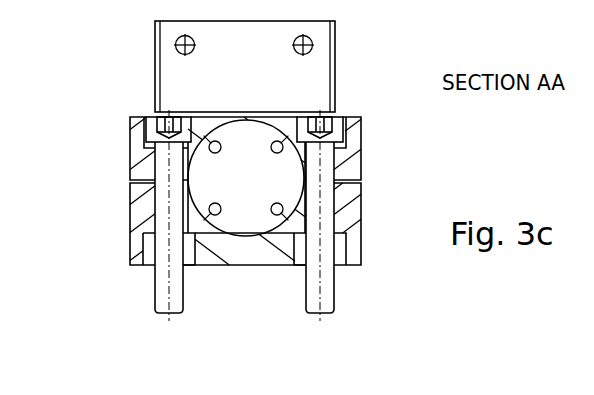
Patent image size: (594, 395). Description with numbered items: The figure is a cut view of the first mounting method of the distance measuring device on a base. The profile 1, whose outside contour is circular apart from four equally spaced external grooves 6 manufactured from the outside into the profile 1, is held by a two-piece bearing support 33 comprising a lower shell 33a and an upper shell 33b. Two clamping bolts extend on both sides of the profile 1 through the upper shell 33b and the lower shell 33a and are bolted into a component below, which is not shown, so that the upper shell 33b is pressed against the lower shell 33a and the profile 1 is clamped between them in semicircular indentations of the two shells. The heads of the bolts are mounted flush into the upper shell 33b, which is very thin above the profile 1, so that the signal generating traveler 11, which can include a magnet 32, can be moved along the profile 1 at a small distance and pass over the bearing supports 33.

The profile 1 is at (246, 178).
The external grooves 6 is at (246, 178).
The signal generating traveler 11 is at (245, 66).
The magnet 32 is at (245, 66).
The bearing support 33 is at (258, 215).
The lower shell 33a is at (137, 230).
The upper shell 33b is at (130, 152).